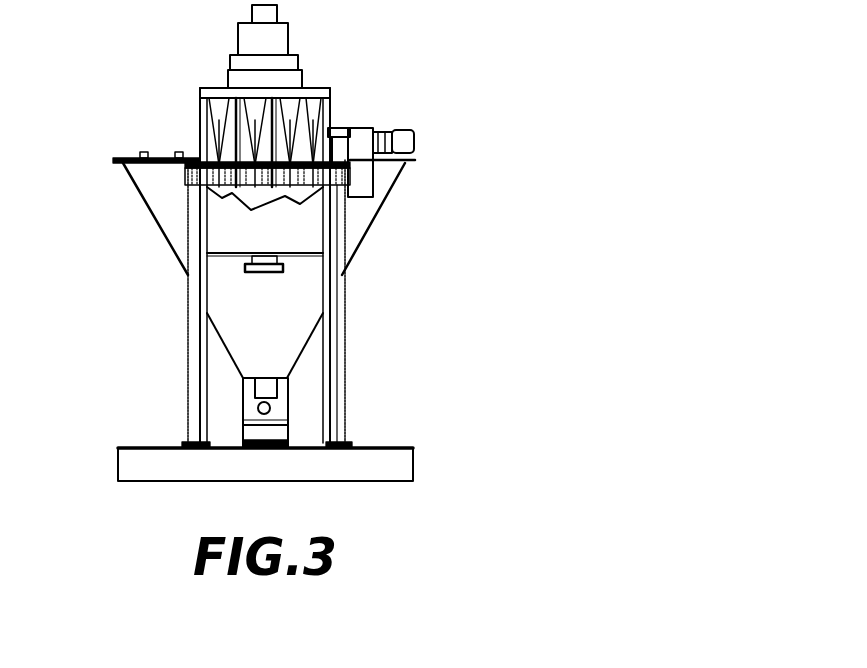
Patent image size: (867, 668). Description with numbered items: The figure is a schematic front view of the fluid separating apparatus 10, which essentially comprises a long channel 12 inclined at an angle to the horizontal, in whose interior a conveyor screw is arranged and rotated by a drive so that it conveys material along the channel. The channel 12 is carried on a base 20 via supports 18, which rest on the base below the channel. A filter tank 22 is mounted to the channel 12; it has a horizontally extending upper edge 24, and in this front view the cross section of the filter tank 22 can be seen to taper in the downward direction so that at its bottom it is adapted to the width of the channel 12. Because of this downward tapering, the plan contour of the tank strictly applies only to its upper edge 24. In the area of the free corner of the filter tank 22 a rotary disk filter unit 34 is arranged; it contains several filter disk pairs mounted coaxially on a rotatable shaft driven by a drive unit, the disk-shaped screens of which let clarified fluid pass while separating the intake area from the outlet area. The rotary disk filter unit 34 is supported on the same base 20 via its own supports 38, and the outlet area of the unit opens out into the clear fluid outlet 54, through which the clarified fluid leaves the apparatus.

The fluid separating apparatus 10 is at (442, 137).
The channel 12 is at (288, 405).
The supports 18 is at (243, 437).
The base 20 is at (413, 452).
The filter tank 22 is at (360, 200).
The upper edge 24 is at (113, 160).
The rotary disk filter unit 34 is at (337, 83).
The supports 38 is at (198, 338).
The clear fluid outlet 54 is at (268, 273).